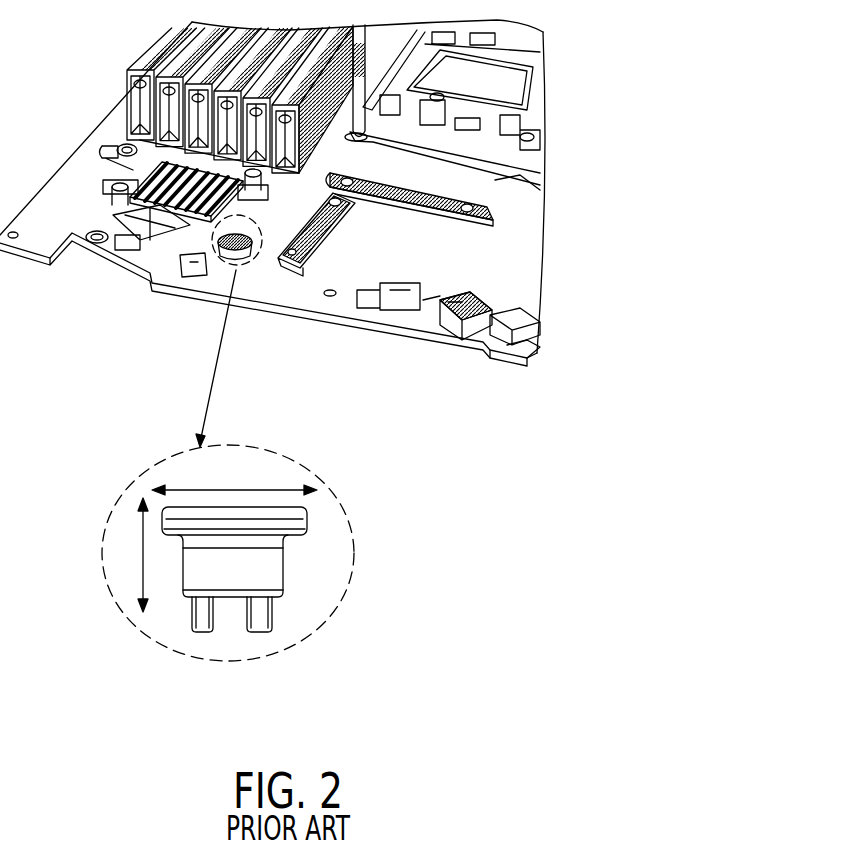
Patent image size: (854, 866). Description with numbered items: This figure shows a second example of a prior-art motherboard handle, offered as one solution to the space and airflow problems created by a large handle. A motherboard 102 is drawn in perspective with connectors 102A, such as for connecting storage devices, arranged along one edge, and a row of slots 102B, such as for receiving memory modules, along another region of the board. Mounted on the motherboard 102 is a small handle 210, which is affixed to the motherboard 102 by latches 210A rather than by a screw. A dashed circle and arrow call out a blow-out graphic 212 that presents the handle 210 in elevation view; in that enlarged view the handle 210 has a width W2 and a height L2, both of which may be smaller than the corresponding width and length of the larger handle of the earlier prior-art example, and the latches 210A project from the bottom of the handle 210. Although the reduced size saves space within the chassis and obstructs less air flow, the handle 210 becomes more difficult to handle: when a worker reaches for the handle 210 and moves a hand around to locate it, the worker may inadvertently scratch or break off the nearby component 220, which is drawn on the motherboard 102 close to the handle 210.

The motherboard 102 is at (322, 297).
The connectors 102A is at (458, 333).
The slots 102B is at (128, 90).
The handle 210 is at (223, 266).
The latches 210A is at (258, 624).
The detail region 212 is at (354, 567).
The nearby component 220 is at (297, 252).
The width W2 is at (234, 473).
The height L2 is at (132, 555).